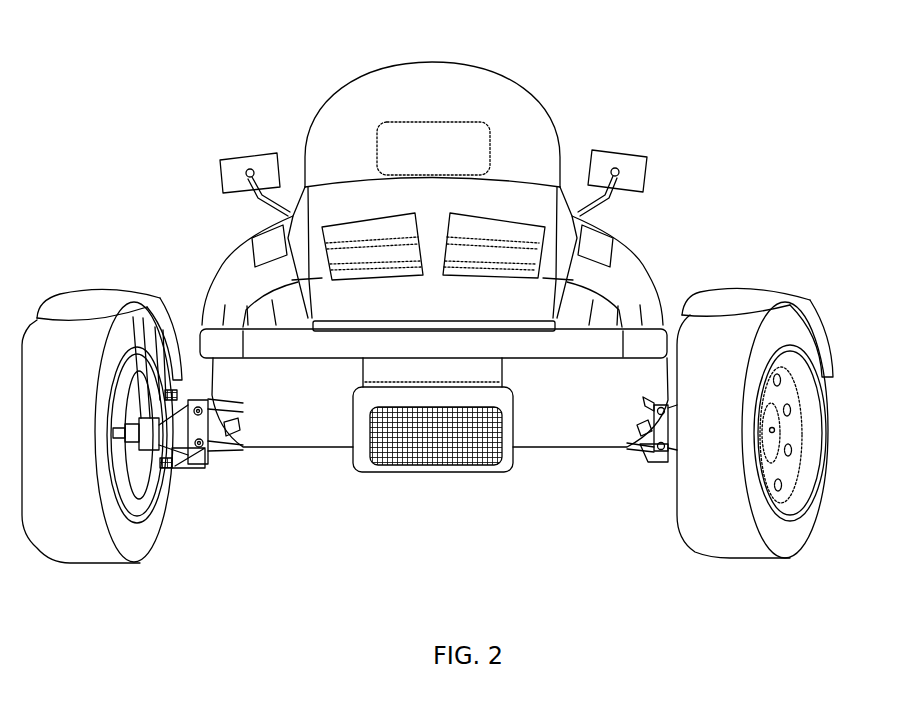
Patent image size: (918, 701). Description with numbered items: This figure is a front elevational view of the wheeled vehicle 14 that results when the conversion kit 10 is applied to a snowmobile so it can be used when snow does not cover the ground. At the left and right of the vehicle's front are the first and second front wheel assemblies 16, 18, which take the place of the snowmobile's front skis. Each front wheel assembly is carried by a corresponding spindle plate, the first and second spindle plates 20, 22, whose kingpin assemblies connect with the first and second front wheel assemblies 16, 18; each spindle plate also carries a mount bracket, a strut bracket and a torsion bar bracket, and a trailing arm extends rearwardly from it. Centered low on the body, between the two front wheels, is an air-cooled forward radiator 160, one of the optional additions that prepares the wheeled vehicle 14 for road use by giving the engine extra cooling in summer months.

The conversion kit 10 is at (572, 88).
The wheeled vehicle 14 is at (158, 194).
The first front wheel assembly 16 is at (143, 497).
The second front wheel assembly 18 is at (803, 503).
The first spindle plate 20 is at (186, 458).
The second spindle plate 22 is at (650, 462).
The air-cooled forward radiator 160 is at (410, 462).